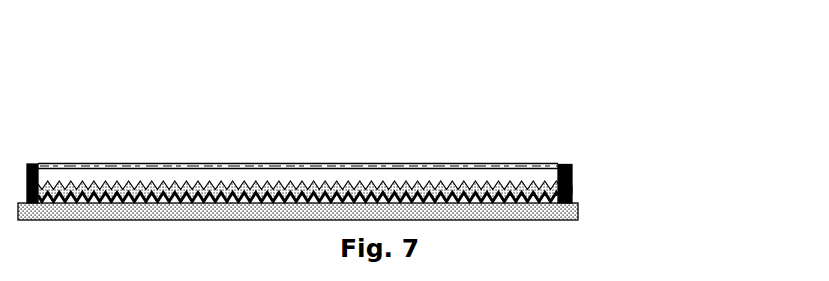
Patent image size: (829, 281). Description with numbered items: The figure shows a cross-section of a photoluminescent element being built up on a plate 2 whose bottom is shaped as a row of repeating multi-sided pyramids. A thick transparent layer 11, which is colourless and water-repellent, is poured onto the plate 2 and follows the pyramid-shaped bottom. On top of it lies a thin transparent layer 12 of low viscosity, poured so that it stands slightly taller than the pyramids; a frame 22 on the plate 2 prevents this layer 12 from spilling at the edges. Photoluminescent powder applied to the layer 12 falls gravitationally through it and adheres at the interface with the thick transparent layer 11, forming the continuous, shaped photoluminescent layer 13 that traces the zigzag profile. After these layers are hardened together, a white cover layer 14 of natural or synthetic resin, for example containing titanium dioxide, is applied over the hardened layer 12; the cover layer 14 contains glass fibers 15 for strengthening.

The plate 2 is at (359, 211).
The thick transparent layer 11 is at (365, 171).
The thin transparent layer 12 is at (371, 129).
The shaped photoluminescent layer 13 is at (370, 155).
The white cover layer 14 is at (371, 109).
The glass fibers 15 is at (371, 85).
The frame 22 is at (635, 182).